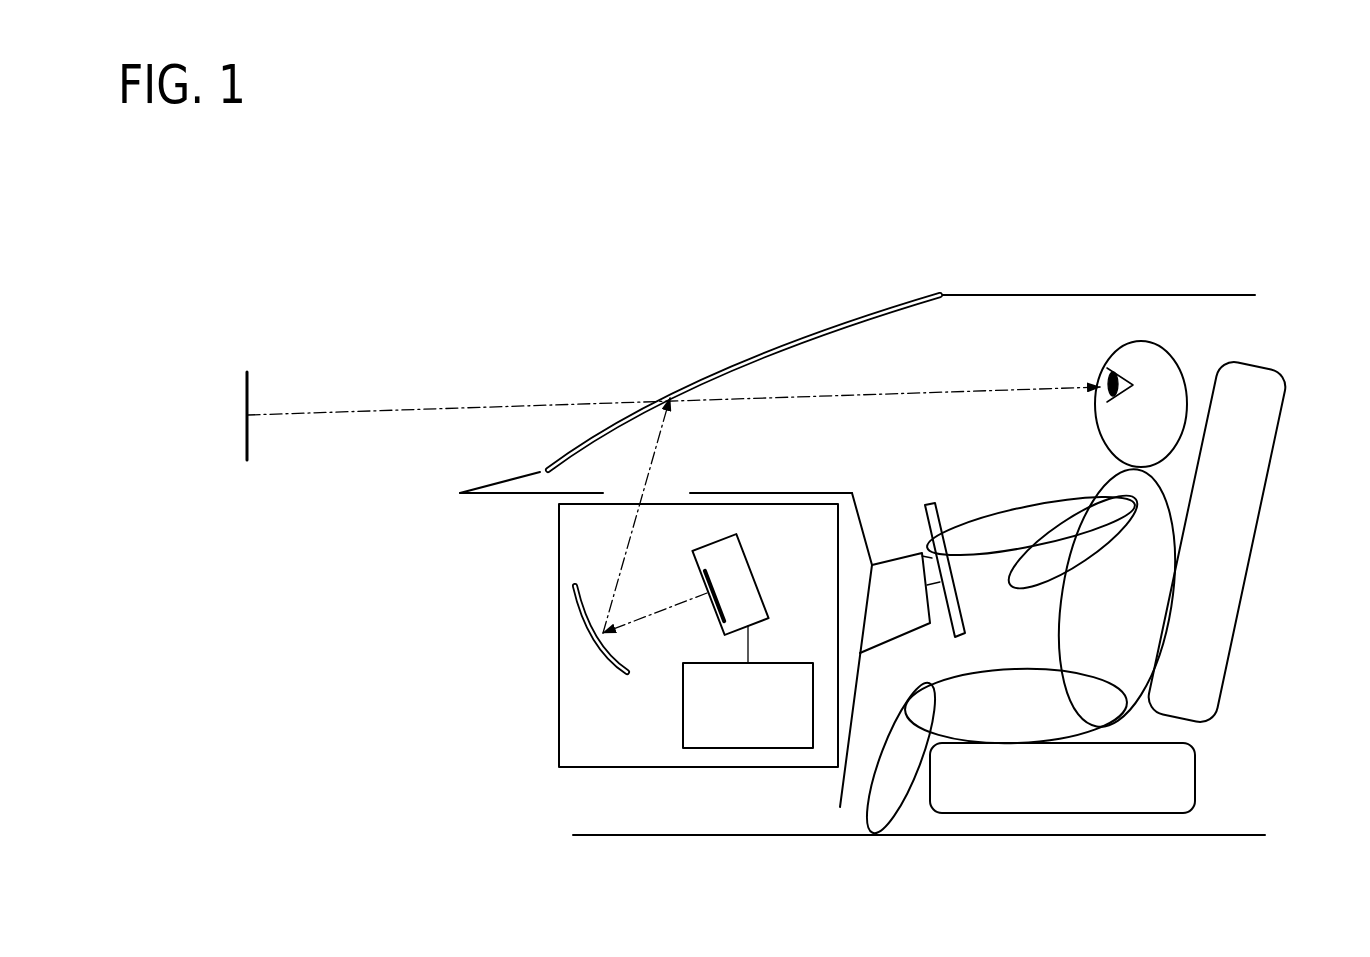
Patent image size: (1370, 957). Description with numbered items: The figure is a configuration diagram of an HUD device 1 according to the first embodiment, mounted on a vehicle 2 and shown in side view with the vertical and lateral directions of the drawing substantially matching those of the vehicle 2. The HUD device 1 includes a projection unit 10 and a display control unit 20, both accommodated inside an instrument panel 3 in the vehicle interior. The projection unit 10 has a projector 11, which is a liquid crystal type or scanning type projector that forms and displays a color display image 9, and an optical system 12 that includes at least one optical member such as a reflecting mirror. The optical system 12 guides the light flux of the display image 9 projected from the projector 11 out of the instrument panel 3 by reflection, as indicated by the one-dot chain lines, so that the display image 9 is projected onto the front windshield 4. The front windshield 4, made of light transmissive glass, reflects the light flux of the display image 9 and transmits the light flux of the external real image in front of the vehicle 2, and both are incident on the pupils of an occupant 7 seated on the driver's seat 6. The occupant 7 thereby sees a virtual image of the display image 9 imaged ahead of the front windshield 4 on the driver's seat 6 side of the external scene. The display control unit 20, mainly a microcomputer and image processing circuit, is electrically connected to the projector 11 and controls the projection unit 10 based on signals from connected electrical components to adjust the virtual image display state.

The HUD device 1 is at (558, 532).
The vehicle 2 is at (1215, 283).
The instrument panel 3 is at (763, 492).
The front windshield 4 is at (797, 338).
The driver's seat 6 is at (1220, 553).
The occupant 7 is at (1178, 372).
The display image 9 is at (248, 398).
The projection unit 10 is at (495, 698).
The projector 11 is at (715, 618).
The optical system 12 is at (620, 664).
The display control unit 20 is at (683, 740).